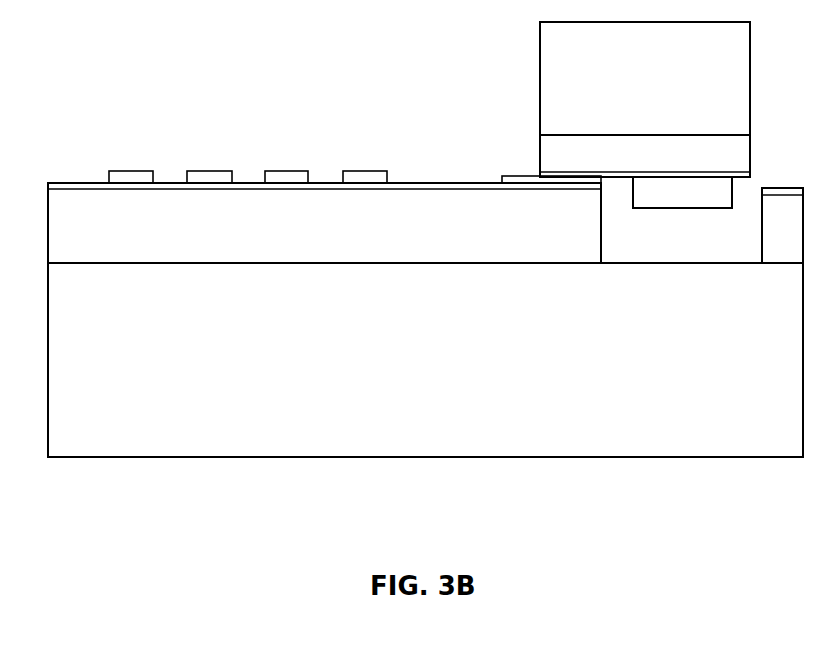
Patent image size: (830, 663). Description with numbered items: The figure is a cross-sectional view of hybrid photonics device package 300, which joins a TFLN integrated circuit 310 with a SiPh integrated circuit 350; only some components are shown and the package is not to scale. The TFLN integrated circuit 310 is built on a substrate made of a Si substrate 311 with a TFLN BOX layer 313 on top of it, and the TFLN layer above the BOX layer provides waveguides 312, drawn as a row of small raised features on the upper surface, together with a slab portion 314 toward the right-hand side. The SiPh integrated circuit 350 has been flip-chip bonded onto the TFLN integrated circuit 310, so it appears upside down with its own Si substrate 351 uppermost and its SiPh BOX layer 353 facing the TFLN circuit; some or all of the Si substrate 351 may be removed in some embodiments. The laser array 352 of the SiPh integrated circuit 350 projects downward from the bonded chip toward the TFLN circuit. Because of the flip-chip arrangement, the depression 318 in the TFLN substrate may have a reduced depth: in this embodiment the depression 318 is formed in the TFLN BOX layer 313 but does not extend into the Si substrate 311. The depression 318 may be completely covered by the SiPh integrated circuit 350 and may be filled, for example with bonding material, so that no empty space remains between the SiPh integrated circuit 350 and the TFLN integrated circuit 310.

The hybrid photonics device package 300 is at (165, 71).
The TFLN integrated circuit 310 is at (123, 467).
The Si substrate 311 is at (193, 410).
The waveguides 312 is at (293, 160).
The TFLN BOX layer 313 is at (393, 237).
The slab portion 314 is at (525, 181).
The depression 318 is at (627, 265).
The SiPh integrated circuit 350 is at (515, 115).
The Si substrate 351 is at (667, 103).
The laser array 352 is at (698, 208).
The SiPh BOX layer 353 is at (740, 168).